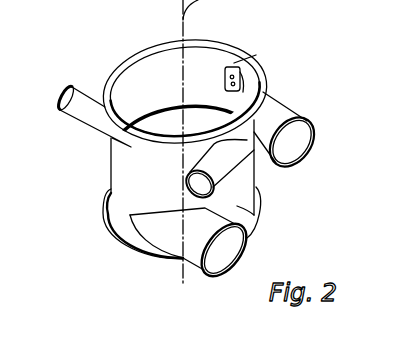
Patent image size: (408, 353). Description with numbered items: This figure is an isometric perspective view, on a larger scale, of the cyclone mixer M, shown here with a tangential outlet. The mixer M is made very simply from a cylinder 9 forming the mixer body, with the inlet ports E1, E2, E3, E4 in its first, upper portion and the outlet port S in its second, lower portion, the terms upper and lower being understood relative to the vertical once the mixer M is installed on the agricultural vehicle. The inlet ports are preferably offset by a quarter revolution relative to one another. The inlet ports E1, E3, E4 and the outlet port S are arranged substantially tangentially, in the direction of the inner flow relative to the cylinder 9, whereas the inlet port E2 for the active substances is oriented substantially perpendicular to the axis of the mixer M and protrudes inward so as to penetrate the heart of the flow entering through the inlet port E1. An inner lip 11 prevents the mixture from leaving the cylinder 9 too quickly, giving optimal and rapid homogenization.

The cyclone mixer M is at (87, 202).
The cylinder 9 is at (254, 215).
The lip 11 is at (158, 112).
The inlet port E1 is at (274, 112).
The inlet port E2 is at (227, 66).
The inlet port E3 is at (85, 103).
The inlet port E4 is at (214, 167).
The outlet port S is at (229, 248).